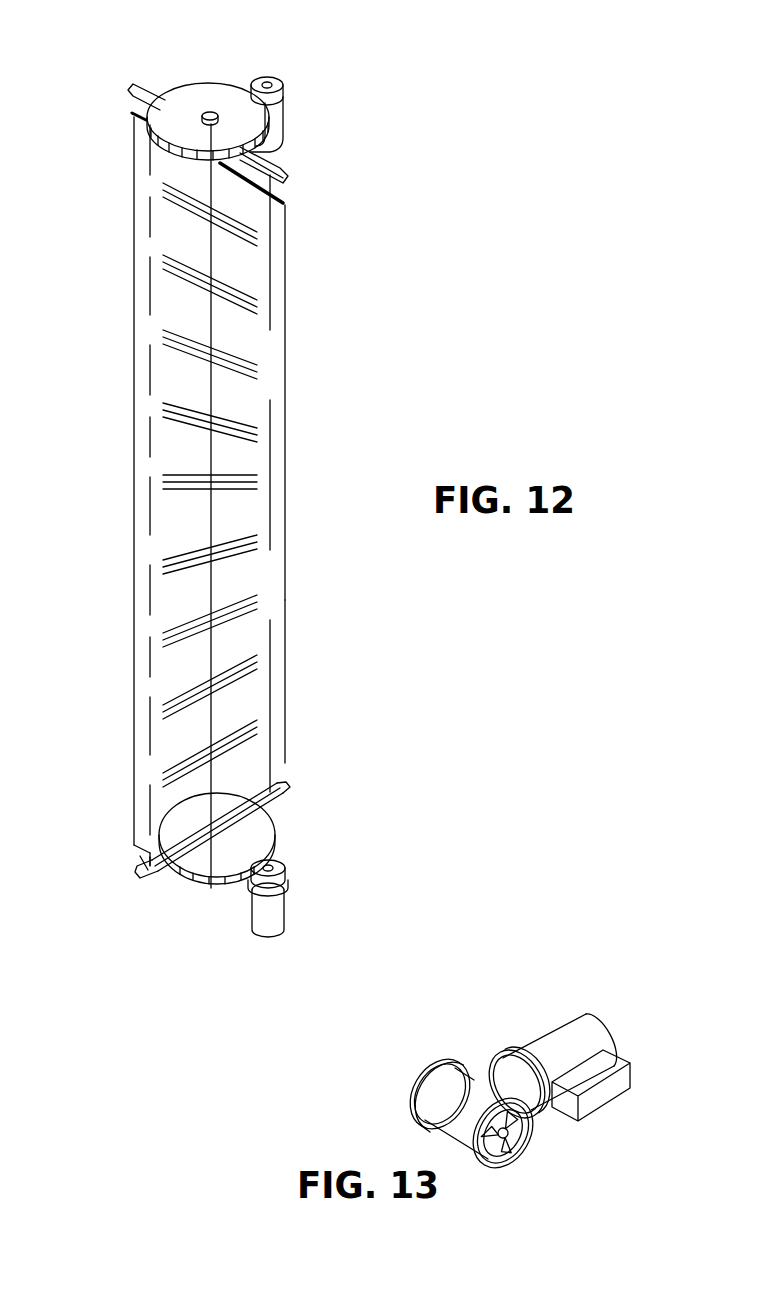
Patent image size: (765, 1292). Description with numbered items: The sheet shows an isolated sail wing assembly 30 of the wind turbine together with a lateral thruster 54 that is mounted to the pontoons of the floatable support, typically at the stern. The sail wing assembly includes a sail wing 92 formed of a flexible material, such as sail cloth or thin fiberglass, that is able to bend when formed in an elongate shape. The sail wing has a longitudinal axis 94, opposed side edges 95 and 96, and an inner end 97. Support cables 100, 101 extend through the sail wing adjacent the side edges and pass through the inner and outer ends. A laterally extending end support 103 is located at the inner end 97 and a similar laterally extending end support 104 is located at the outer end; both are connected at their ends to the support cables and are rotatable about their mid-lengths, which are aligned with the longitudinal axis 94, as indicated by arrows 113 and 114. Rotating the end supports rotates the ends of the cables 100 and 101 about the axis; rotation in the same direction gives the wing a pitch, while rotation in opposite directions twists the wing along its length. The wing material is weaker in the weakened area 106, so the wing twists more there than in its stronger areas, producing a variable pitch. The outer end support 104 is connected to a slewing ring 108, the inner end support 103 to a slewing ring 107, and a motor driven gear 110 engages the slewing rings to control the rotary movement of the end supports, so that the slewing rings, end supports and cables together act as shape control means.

In FIG. 12, the sail wing assembly 30 is at (94, 400).
In FIG. 13, the lateral thruster 54 is at (605, 993).
In FIG. 12, the sail wing 92 is at (291, 551).
In FIG. 12, the longitudinal axis 94 is at (211, 637).
In FIG. 12, the side edge 95 is at (286, 630).
In FIG. 12, the side edge 96 is at (134, 652).
In FIG. 12, the inner end 97 is at (223, 800).
In FIG. 12, the support cable 100 is at (270, 478).
In FIG. 12, the support cable 101 is at (150, 492).
In FIG. 12, the laterally extending end support 103 is at (156, 868).
In FIG. 12, the laterally extending end support 104 is at (150, 97).
In FIG. 12, the weakened area 106 is at (212, 410).
In FIG. 12, the slewing ring 107 is at (205, 863).
In FIG. 12, the slewing ring 108 is at (213, 90).
In FIG. 12, the motor driven gear 110 is at (280, 78).
In FIG. 12, the arrow 113 is at (148, 63).
In FIG. 12, the arrow 114 is at (356, 780).